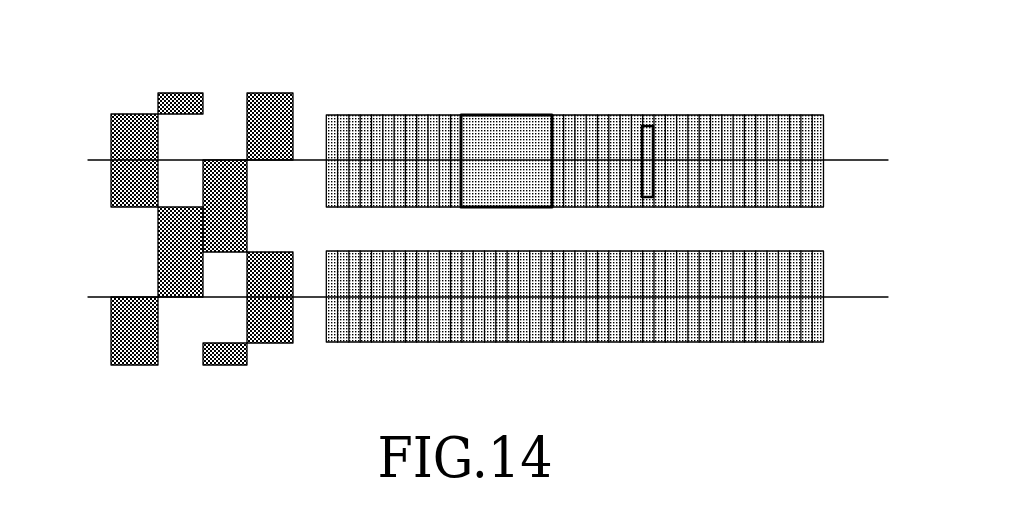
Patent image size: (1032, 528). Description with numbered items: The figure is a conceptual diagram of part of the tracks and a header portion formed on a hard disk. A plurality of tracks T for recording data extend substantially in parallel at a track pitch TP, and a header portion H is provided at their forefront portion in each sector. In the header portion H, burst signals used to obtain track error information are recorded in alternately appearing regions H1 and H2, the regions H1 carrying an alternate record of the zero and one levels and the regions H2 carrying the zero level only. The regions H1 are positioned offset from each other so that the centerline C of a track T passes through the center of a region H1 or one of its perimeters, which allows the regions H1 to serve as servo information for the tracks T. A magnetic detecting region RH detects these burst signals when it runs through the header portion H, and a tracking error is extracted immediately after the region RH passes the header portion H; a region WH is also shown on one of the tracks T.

The header portion H is at (194, 225).
The region having alternate record of 0 and 1 levels H1 is at (128, 190).
The region having record of 0 level only H2 is at (142, 253).
The track T is at (622, 191).
The centerline of the track C is at (488, 223).
The track pitch TP is at (855, 161).
The write head WH is at (513, 118).
The magnetic detecting region RH is at (647, 127).